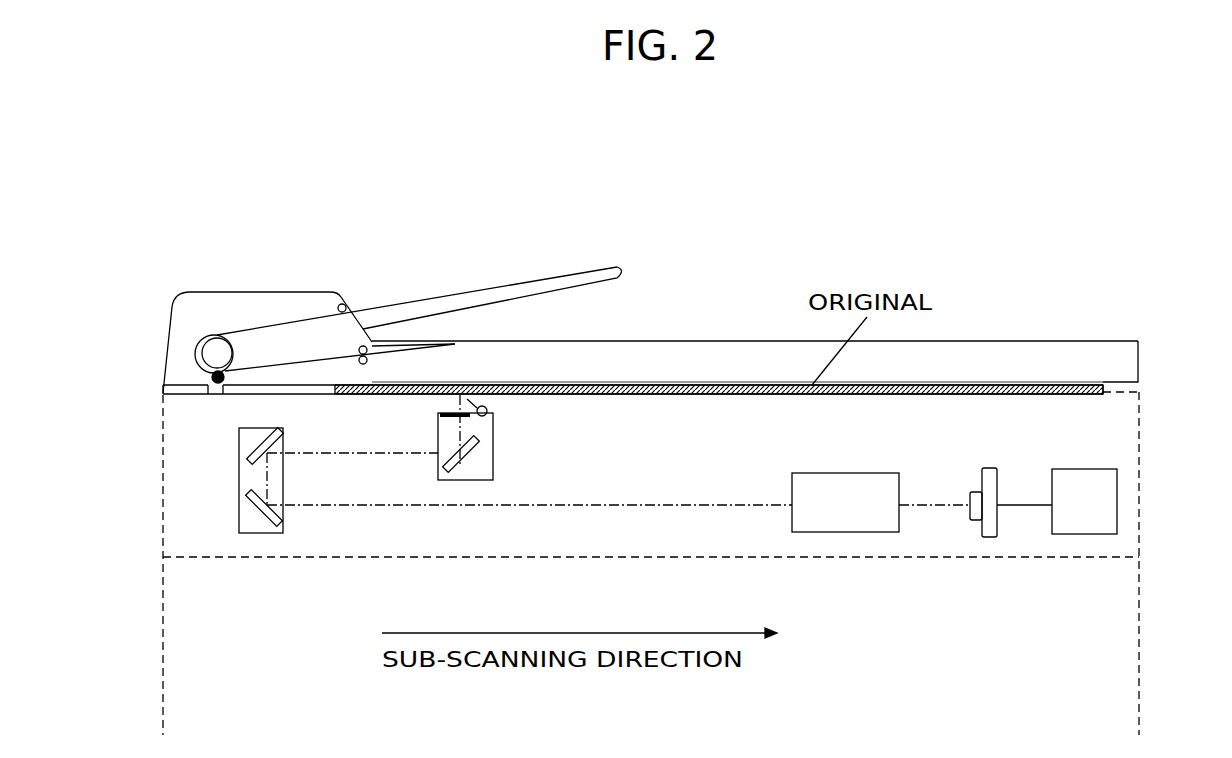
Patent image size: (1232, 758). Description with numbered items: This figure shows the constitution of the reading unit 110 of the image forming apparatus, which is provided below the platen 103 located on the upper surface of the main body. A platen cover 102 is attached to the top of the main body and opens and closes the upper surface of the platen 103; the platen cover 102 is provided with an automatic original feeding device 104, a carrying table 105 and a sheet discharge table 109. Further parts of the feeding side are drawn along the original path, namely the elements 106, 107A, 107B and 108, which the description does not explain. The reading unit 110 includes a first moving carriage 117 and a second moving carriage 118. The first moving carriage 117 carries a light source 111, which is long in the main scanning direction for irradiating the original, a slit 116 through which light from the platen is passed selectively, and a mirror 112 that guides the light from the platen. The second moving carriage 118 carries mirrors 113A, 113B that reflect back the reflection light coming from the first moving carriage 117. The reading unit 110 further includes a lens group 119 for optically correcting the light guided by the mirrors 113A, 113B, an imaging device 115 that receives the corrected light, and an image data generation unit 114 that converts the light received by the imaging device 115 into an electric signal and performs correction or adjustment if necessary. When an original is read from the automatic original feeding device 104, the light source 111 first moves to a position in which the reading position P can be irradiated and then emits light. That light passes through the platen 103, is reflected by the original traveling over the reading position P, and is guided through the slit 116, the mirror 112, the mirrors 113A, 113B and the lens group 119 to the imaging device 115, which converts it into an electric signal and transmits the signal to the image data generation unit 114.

The platen cover 102 is at (1028, 362).
The platen 103 is at (1125, 392).
The automatic original feeding device 104 is at (273, 300).
The carrying table 105 is at (607, 268).
The pivot 106 is at (345, 305).
The feed roller 107A is at (207, 353).
The guide member 107B is at (365, 348).
The roller housing 108 is at (242, 332).
The sheet discharge table 109 is at (680, 341).
The reading unit 110 is at (1143, 497).
The light source 111 is at (490, 412).
The mirror 112 is at (458, 458).
The mirror 113A is at (248, 460).
The mirror 113B is at (265, 523).
The image data generation unit 114 is at (1070, 523).
The imaging device 115 is at (985, 513).
The slit 116 is at (447, 415).
The first moving carriage 117 is at (493, 465).
The second moving carriage 118 is at (238, 522).
The lens group 119 is at (863, 532).
The reading position P is at (212, 375).